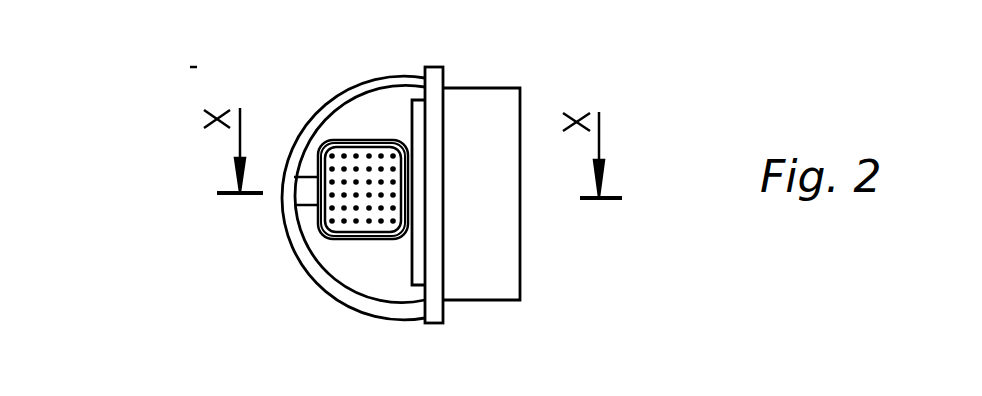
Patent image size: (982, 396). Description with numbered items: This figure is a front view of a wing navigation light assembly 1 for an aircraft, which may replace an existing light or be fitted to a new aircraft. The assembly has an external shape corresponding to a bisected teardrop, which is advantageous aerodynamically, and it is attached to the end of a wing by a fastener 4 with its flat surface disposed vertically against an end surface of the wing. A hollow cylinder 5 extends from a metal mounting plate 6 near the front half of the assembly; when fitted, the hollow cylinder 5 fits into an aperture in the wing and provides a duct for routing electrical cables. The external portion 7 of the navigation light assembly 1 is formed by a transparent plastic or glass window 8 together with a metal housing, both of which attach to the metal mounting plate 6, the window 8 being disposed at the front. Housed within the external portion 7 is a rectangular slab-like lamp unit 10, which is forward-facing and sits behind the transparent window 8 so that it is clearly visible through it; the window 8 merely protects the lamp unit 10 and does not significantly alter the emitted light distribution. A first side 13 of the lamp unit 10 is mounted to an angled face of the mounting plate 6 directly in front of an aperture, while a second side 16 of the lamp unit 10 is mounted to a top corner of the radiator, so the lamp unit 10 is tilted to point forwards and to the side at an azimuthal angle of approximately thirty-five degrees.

The navigation light assembly 1 is at (292, 88).
The fastener 4 is at (305, 190).
The hollow cylinder 5 is at (489, 209).
The metal mounting plate 6 is at (445, 318).
The external portion 7 is at (295, 258).
The window 8 is at (375, 107).
The lamp unit 10 is at (318, 221).
The first side 13 is at (408, 147).
The second side 16 is at (312, 158).